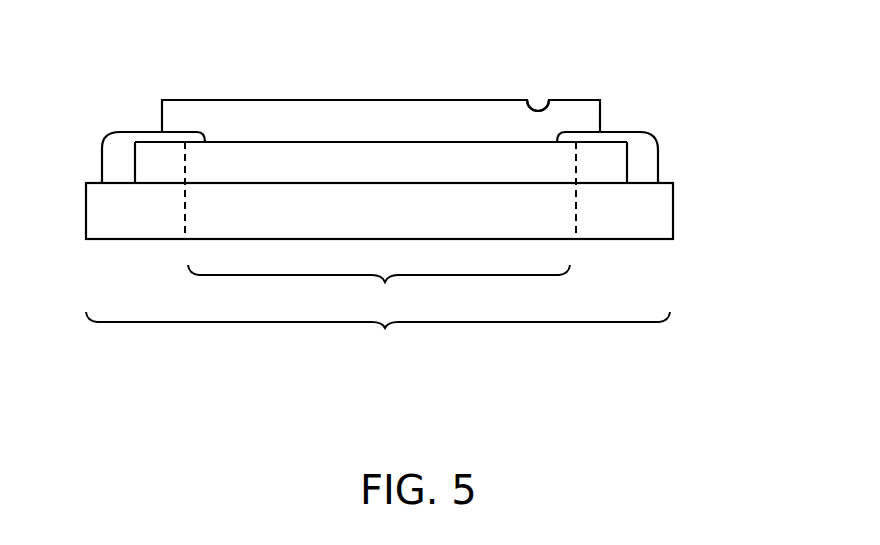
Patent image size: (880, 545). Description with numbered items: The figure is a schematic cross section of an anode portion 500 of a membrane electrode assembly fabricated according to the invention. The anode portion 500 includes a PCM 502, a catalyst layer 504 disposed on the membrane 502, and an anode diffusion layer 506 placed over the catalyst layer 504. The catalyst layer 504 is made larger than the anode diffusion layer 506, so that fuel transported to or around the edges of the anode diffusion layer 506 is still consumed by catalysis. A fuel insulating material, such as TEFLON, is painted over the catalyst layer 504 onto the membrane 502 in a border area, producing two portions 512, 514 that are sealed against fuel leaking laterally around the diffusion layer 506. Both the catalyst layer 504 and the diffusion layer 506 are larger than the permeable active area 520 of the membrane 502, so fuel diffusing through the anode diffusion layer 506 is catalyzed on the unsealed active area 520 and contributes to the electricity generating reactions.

The anode portion 500 is at (748, 303).
The PCM 502 is at (700, 207).
The catalyst layer 504 is at (285, 150).
The anode diffusion layer 506 is at (548, 101).
The sealed portion 512 is at (101, 152).
The sealed portion 514 is at (658, 161).
The active area 520 is at (380, 227).